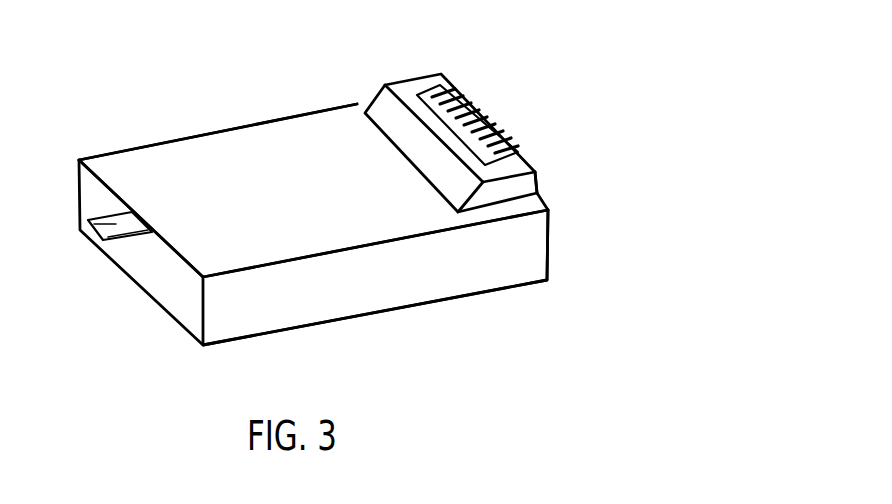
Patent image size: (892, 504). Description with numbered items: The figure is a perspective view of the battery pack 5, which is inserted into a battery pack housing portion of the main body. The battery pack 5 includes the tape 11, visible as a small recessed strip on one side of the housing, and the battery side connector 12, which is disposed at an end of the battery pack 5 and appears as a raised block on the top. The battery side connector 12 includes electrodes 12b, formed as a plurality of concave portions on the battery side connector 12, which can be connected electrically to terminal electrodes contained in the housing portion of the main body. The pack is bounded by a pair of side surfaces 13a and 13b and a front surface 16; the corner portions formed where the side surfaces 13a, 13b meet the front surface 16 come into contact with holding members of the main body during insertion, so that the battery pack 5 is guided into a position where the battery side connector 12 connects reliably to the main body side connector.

The battery pack 5 is at (300, 62).
The tape 11 is at (92, 229).
The battery side connector 12 is at (430, 95).
The electrodes 12b is at (483, 117).
The side surface 13a is at (445, 280).
The side surface 13b is at (210, 132).
The front surface 16 is at (540, 173).